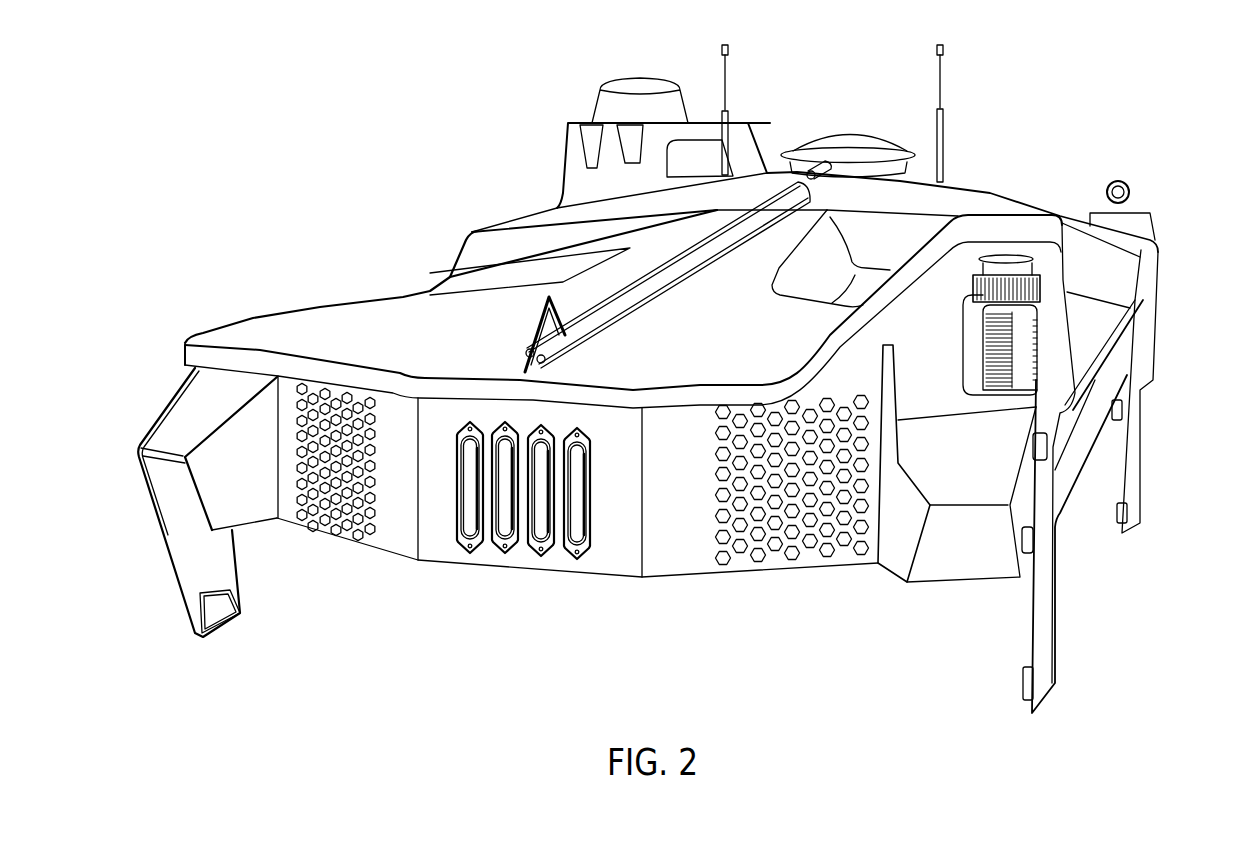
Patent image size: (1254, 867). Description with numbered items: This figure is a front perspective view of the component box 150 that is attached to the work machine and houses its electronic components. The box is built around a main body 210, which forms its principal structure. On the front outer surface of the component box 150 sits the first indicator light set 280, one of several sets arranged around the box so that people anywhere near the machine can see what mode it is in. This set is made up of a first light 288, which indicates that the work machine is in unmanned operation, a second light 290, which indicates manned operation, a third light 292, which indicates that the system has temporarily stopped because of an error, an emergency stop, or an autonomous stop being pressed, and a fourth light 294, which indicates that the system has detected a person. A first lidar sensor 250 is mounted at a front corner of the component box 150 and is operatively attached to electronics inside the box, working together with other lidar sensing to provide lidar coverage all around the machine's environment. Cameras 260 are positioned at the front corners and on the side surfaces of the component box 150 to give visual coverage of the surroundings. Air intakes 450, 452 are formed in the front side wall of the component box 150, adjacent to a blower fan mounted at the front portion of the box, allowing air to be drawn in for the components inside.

The component box 150 is at (977, 207).
The main body 210 is at (1155, 322).
The first lidar sensor 250 is at (975, 339).
The camera 260 is at (175, 492).
The first indicator light set 280 is at (536, 521).
The first light 288 is at (468, 520).
The second light 290 is at (503, 521).
The third light 292 is at (538, 524).
The fourth light 294 is at (573, 526).
The air intake 450 is at (340, 522).
The air intake 452 is at (773, 557).